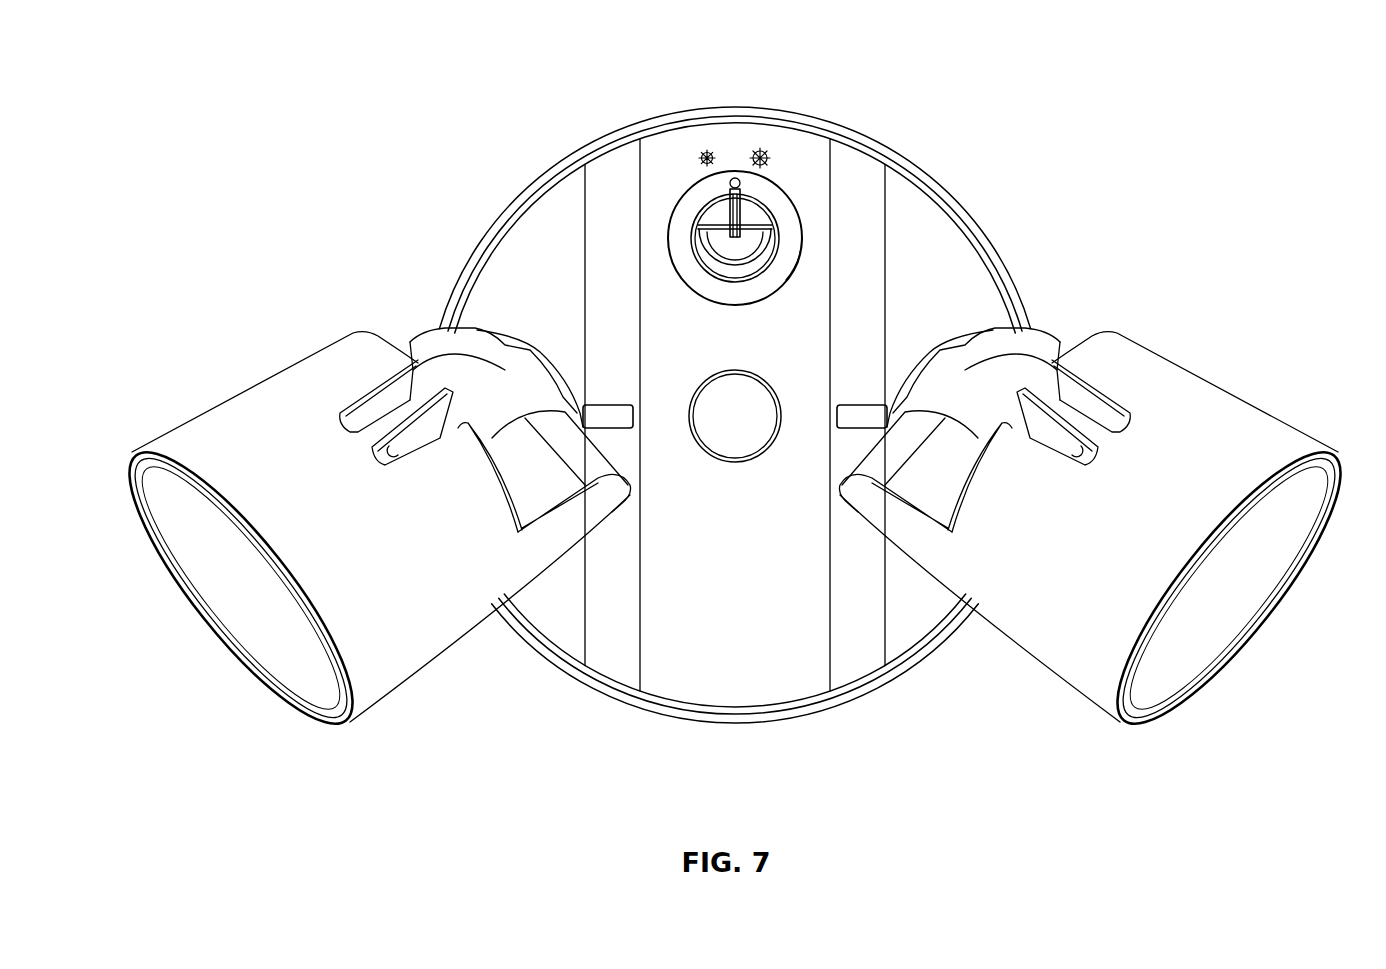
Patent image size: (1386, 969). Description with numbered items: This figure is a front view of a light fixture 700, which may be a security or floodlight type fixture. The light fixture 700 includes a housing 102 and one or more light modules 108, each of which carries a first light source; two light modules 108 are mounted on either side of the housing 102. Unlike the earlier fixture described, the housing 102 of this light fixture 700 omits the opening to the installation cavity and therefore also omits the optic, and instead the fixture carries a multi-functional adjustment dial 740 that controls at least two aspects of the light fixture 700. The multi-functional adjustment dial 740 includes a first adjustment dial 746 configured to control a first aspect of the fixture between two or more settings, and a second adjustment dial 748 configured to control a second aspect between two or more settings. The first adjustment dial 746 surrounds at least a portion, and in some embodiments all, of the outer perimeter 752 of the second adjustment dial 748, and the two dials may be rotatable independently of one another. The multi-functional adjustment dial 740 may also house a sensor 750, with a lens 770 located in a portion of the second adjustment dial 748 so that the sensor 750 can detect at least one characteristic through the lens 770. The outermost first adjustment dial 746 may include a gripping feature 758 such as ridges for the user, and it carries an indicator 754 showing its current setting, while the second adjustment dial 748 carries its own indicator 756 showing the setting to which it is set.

The light fixture 700 is at (258, 183).
The housing 102 is at (533, 222).
The light module 108 is at (257, 403).
The multi-functional adjustment dial 740 is at (718, 172).
The first adjustment dial 746 is at (680, 222).
The second adjustment dial 748 is at (757, 210).
The sensor 750 is at (733, 250).
The outer perimeter 752 is at (763, 273).
The indicator 754 is at (728, 172).
The indicator 756 is at (735, 228).
The gripping feature 758 is at (800, 255).
The lens 770 is at (722, 248).